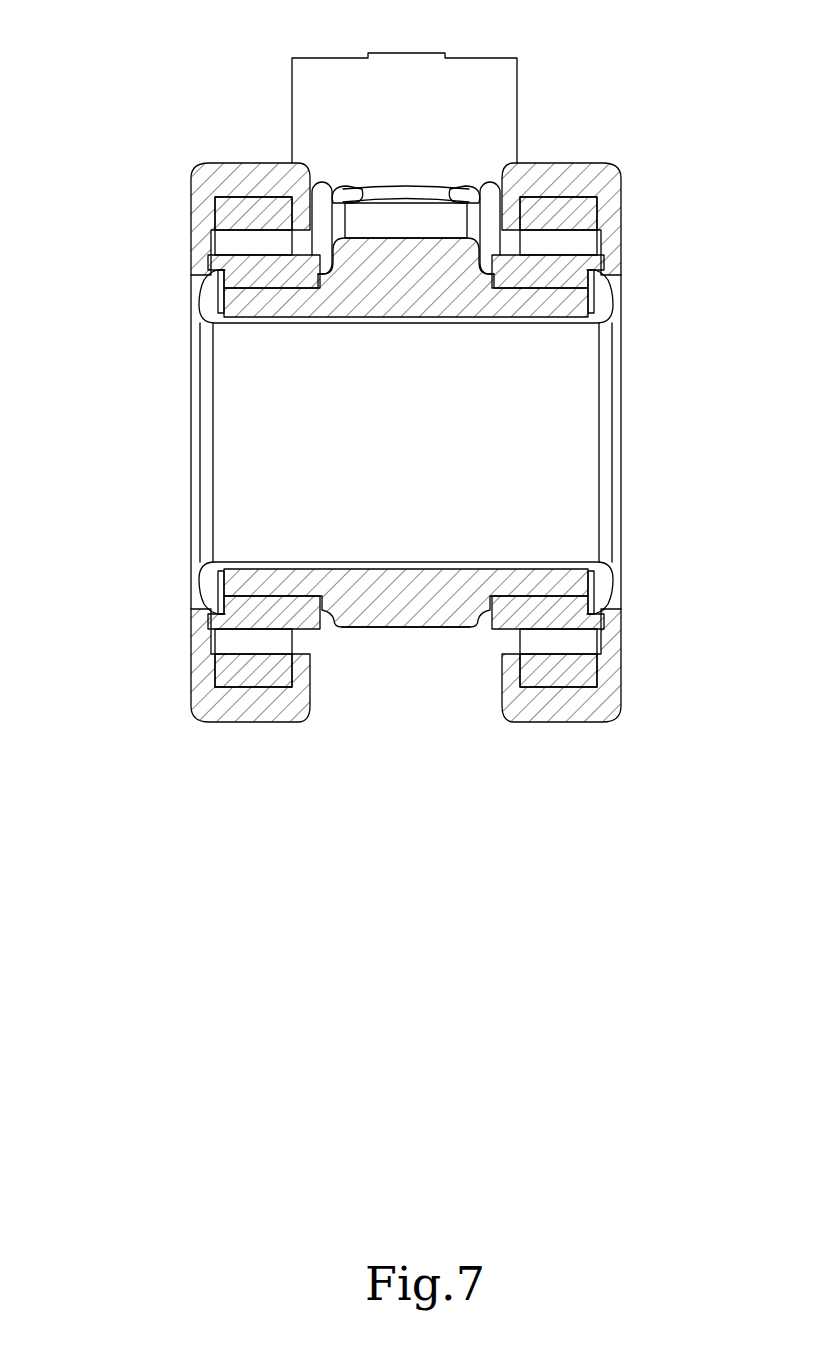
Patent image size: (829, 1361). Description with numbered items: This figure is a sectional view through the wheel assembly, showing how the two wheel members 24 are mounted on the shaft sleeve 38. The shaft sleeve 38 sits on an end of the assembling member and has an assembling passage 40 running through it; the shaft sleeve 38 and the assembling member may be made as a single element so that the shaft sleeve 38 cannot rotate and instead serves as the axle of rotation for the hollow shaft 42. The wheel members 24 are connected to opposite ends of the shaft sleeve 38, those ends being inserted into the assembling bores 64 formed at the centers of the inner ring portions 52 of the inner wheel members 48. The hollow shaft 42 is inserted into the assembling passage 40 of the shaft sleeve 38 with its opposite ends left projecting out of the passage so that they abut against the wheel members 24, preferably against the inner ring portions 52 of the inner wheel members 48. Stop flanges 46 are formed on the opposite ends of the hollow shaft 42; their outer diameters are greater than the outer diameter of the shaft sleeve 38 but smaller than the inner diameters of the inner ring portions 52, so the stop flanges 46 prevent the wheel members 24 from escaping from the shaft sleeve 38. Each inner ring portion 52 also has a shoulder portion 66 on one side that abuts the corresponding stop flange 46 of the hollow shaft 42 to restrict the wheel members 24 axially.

The wheel member 24 is at (600, 163).
The shaft sleeve 38 is at (403, 585).
The assembling passage 40 is at (528, 572).
The hollow shaft 42 is at (468, 563).
The stop flange 46 is at (217, 320).
The inner wheel member 48 is at (268, 688).
The inner ring portion 52 is at (287, 263).
The assembling bore 64 is at (280, 293).
The shoulder portion 66 is at (226, 277).